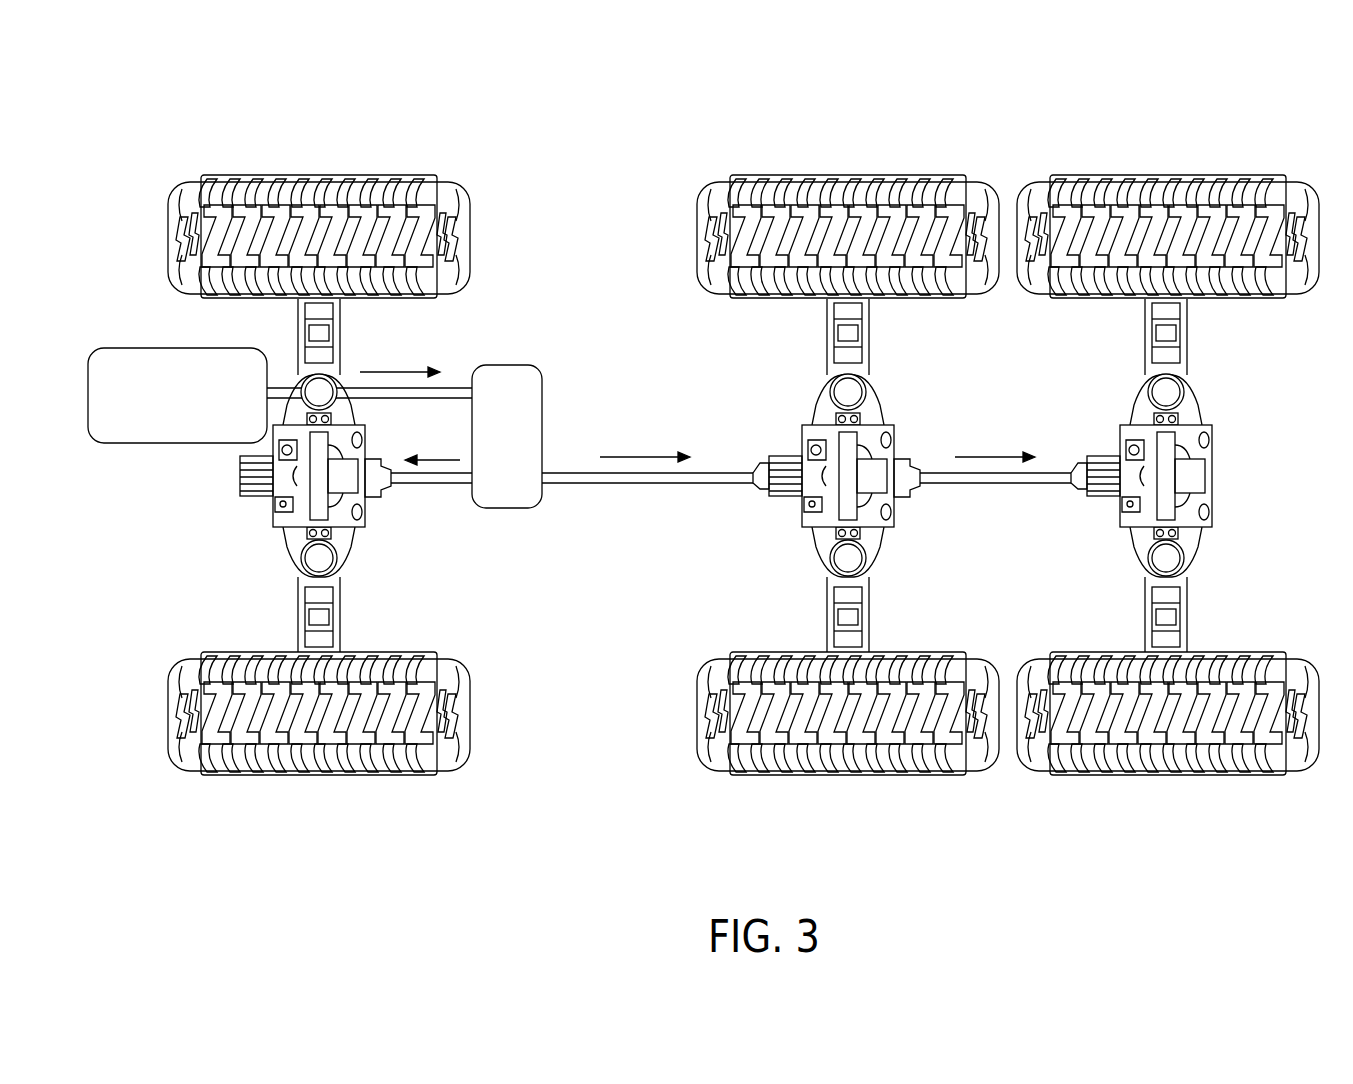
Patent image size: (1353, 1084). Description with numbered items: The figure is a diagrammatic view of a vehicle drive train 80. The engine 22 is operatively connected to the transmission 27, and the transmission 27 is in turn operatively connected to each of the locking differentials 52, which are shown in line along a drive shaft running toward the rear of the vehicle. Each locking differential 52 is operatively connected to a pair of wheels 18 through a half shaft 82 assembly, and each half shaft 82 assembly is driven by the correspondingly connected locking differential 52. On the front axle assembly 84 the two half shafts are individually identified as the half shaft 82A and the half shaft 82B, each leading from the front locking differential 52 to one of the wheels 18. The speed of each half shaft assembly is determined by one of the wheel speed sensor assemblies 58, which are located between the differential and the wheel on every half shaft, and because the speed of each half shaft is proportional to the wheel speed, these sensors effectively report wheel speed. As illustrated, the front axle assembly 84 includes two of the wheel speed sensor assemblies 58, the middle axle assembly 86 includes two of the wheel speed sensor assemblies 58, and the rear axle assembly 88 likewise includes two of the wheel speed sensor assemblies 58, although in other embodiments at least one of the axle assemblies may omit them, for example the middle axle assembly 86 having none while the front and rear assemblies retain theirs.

The wheels 18 is at (355, 176).
The engine 22 is at (108, 348).
The transmission 27 is at (510, 365).
The locking differential 52 is at (718, 486).
The wheel speed sensor assembly 58 is at (762, 451).
The vehicle drive train 80 is at (690, 120).
The half shaft assembly 82 is at (1007, 475).
The half shaft 82A is at (354, 614).
The half shaft 82B is at (279, 337).
The front axle assembly 84 is at (497, 792).
The middle axle assembly 86 is at (693, 792).
The rear axle assembly 88 is at (1060, 792).